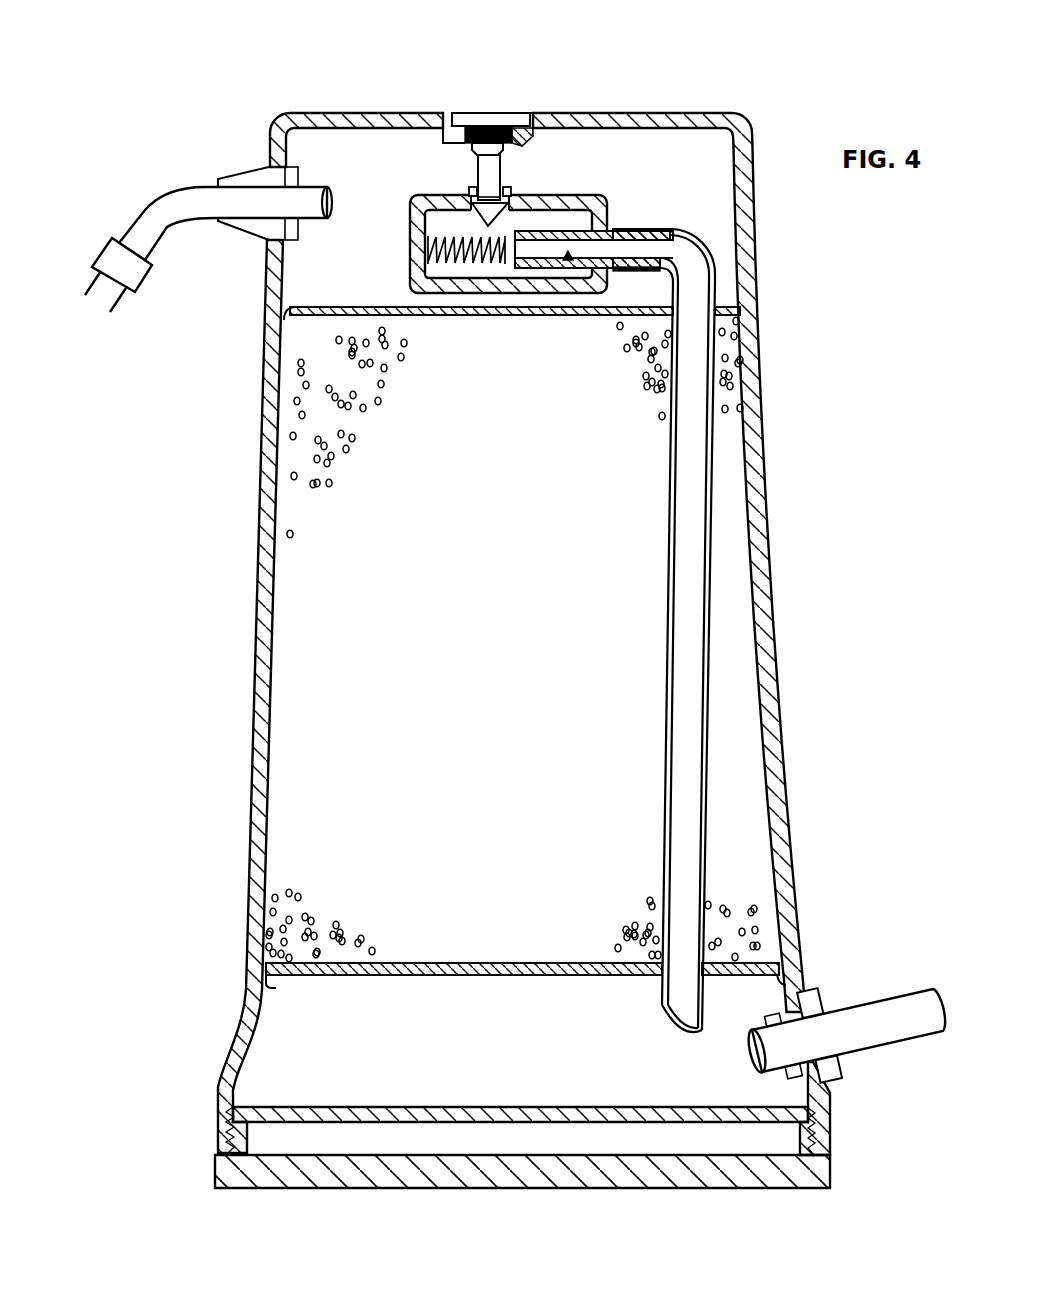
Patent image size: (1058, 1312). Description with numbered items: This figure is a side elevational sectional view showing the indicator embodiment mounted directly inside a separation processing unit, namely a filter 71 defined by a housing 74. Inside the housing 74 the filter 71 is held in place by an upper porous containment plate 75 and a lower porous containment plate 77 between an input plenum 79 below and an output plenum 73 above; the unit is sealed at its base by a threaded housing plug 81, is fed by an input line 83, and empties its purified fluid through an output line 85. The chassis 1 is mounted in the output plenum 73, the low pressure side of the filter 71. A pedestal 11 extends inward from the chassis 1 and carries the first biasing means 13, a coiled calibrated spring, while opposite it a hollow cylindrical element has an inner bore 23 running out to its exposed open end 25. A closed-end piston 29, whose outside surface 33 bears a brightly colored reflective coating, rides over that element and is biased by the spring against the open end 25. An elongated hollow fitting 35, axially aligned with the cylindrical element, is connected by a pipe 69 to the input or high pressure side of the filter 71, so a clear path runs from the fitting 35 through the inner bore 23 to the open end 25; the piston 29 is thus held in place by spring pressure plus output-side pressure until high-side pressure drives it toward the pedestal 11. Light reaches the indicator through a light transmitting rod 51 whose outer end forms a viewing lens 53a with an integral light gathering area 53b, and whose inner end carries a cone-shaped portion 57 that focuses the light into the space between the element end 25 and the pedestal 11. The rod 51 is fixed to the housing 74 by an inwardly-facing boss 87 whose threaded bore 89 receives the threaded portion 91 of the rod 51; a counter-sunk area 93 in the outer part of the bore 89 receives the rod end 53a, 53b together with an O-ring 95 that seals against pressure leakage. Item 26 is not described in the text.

The chassis 1 is at (410, 265).
The pedestal 11 is at (453, 233).
The first biasing means 13 is at (483, 268).
The inner bore 23 is at (556, 262).
The open end 25 is at (525, 268).
The seal 26 is at (612, 273).
The piston 29 is at (532, 262).
The outside surface 33 is at (588, 240).
The hollow fitting 35 is at (637, 231).
The light transmitting rod 51 is at (497, 170).
The viewing lens 53a is at (484, 112).
The light gathering area 53b is at (456, 112).
The cone-shaped portion 57 is at (498, 213).
The pipe 69 is at (668, 593).
The filter 71 is at (552, 737).
The output plenum 73 is at (379, 250).
The housing 74 is at (250, 786).
The upper porous containment plate 75 is at (395, 315).
The lower porous containment plate 77 is at (428, 963).
The input plenum 79 is at (516, 1048).
The base threaded housing plug 81 is at (413, 1107).
The input line 83 is at (880, 1036).
The output line 85 is at (170, 228).
The boss 87 is at (455, 138).
The threaded bore 89 is at (516, 160).
The threaded portion 91 is at (475, 148).
The counter-sunk area 93 is at (532, 112).
The O-ring 95 is at (518, 140).